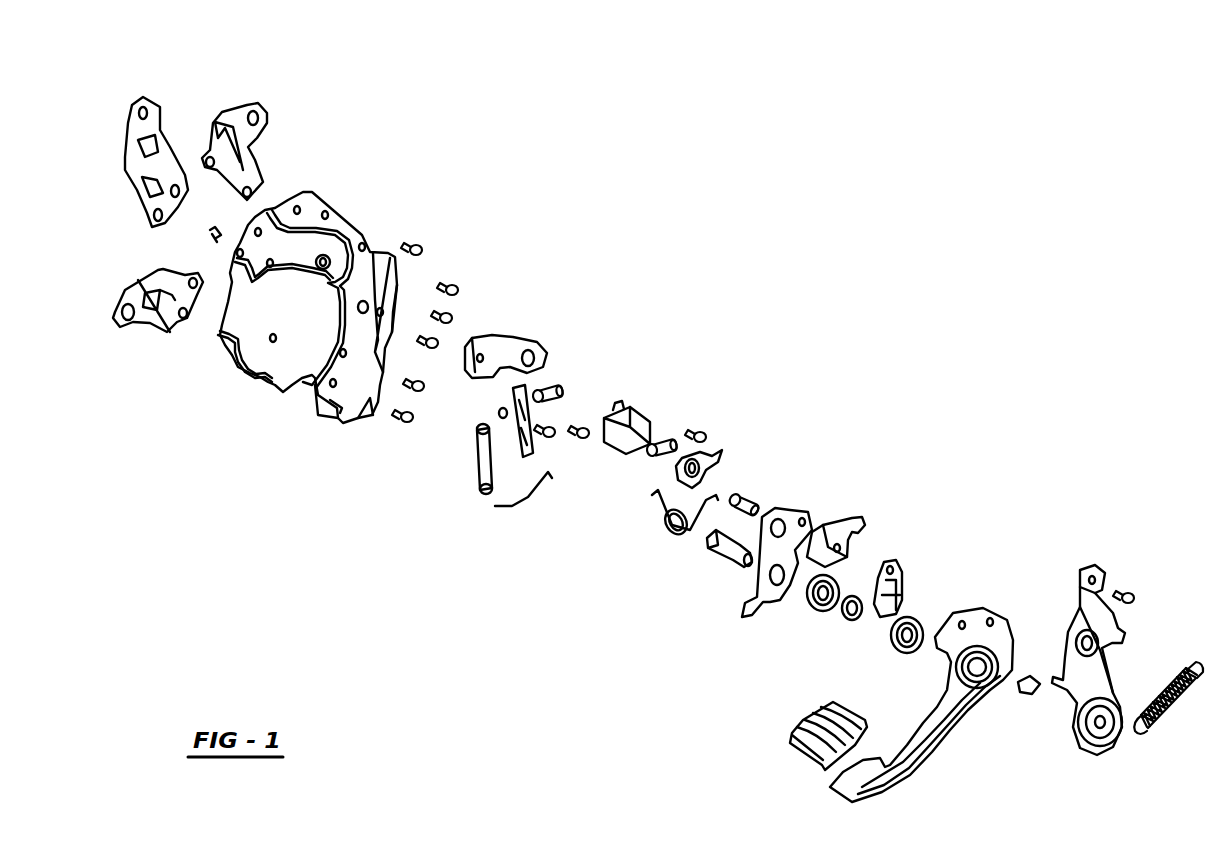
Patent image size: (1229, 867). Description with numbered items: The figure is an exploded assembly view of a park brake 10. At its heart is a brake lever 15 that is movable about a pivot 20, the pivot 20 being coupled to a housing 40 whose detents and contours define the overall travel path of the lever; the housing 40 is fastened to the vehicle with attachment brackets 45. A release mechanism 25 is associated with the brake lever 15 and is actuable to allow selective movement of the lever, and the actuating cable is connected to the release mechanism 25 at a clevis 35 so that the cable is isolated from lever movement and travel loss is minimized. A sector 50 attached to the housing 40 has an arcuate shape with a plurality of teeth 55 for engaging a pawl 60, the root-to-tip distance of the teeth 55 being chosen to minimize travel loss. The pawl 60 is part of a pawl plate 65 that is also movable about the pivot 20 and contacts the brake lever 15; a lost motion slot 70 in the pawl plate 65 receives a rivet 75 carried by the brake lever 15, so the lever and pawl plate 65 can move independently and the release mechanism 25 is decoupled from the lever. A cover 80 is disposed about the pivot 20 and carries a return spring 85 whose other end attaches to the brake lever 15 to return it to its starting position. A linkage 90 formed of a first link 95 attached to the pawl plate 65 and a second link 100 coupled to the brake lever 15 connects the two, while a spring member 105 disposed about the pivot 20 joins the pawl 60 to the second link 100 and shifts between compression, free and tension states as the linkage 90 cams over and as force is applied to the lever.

The park brake 10 is at (340, 106).
The brake lever 15 is at (937, 743).
The pivot 20 is at (990, 664).
The release mechanism 25 is at (768, 694).
The clevis 35 is at (903, 583).
The housing 40 is at (268, 383).
The attachment brackets 45 is at (138, 177).
The sector 50 is at (500, 337).
The teeth 55 is at (503, 372).
The pawl 60 is at (710, 462).
The pawl plate 65 is at (793, 517).
The lost motion slot 70 is at (827, 527).
The rivet 75 is at (582, 427).
The cover 80 is at (1102, 683).
The return spring 85 is at (1177, 697).
The linkage 90 is at (523, 497).
The first link 95 is at (488, 492).
The second link 100 is at (527, 457).
The spring member 105 is at (667, 535).